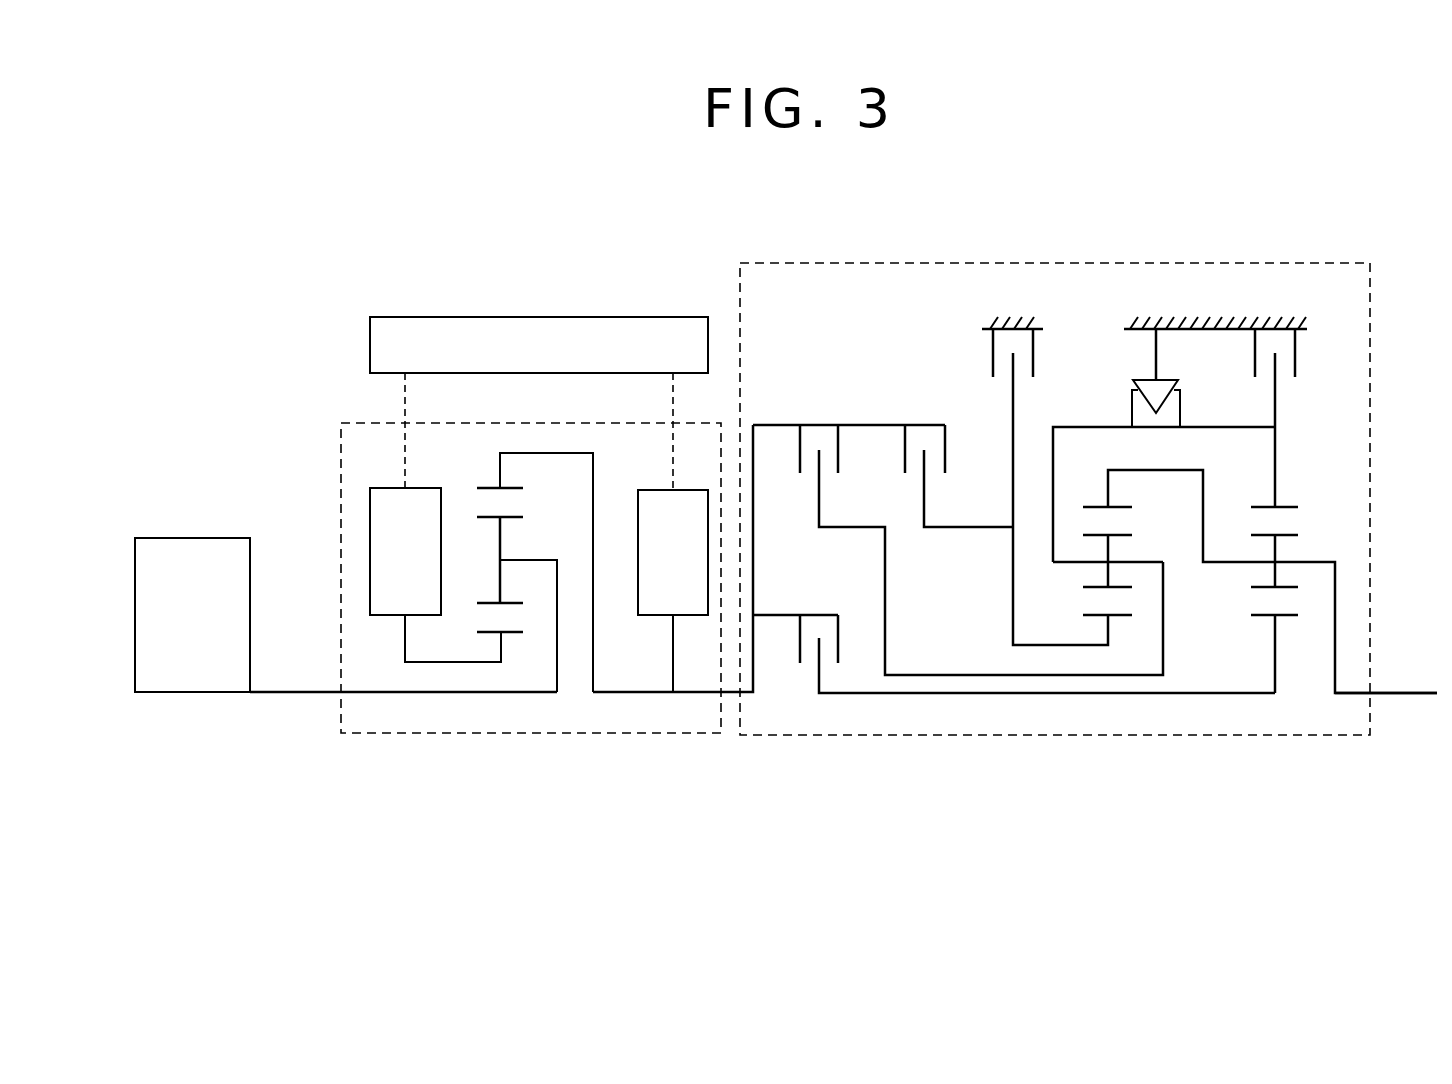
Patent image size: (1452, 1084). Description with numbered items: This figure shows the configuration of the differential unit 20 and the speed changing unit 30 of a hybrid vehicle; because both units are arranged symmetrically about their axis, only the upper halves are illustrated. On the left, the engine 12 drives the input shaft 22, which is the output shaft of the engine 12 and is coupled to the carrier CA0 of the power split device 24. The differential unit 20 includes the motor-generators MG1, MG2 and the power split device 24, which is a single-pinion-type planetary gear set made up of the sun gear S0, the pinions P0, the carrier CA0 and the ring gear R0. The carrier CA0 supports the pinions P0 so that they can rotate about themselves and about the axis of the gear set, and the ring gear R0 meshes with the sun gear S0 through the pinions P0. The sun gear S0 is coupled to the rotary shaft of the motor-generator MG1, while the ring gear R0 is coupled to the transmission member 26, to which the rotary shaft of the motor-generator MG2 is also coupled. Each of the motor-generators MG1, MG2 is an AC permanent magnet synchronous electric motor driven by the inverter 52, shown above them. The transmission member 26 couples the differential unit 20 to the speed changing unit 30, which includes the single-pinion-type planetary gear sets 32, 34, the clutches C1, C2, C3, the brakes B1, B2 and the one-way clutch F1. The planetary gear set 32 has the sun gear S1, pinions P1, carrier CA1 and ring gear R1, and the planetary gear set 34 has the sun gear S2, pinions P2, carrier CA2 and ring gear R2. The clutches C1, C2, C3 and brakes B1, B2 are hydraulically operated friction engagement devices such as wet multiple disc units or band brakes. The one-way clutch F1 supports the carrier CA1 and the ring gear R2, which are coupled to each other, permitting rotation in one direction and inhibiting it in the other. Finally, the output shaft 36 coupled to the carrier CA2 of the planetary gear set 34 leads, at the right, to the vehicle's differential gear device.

The engine 12 is at (200, 538).
The differential unit 20 is at (597, 423).
The input shaft 22 is at (302, 694).
The power split device 24 is at (525, 623).
The transmission member 26 is at (702, 693).
The speed changing unit 30 is at (1307, 263).
The planetary gear set 32 is at (1229, 632).
The planetary gear set 34 is at (1277, 636).
The output shaft 36 is at (1383, 693).
The inverter 52 is at (660, 317).
The motor-generator MG1 is at (388, 488).
The motor-generator MG2 is at (652, 490).
The ring gear R0 is at (515, 489).
The carrier CA0 is at (516, 560).
The pinions P0 is at (477, 603).
The sun gear S0 is at (509, 661).
The clutch C1 is at (1014, 642).
The clutch C2 is at (958, 538).
The clutch C3 is at (959, 464).
The brake B1 is at (1045, 468).
The brake B2 is at (1275, 399).
The one-way clutch F1 is at (1180, 426).
The ring gear R1 is at (1123, 505).
The carrier CA1 is at (1123, 560).
The pinions P1 is at (1092, 588).
The sun gear S1 is at (1123, 618).
The ring gear R2 is at (1292, 505).
The carrier CA2 is at (1292, 560).
The pinions P2 is at (1260, 588).
The sun gear S2 is at (1290, 618).